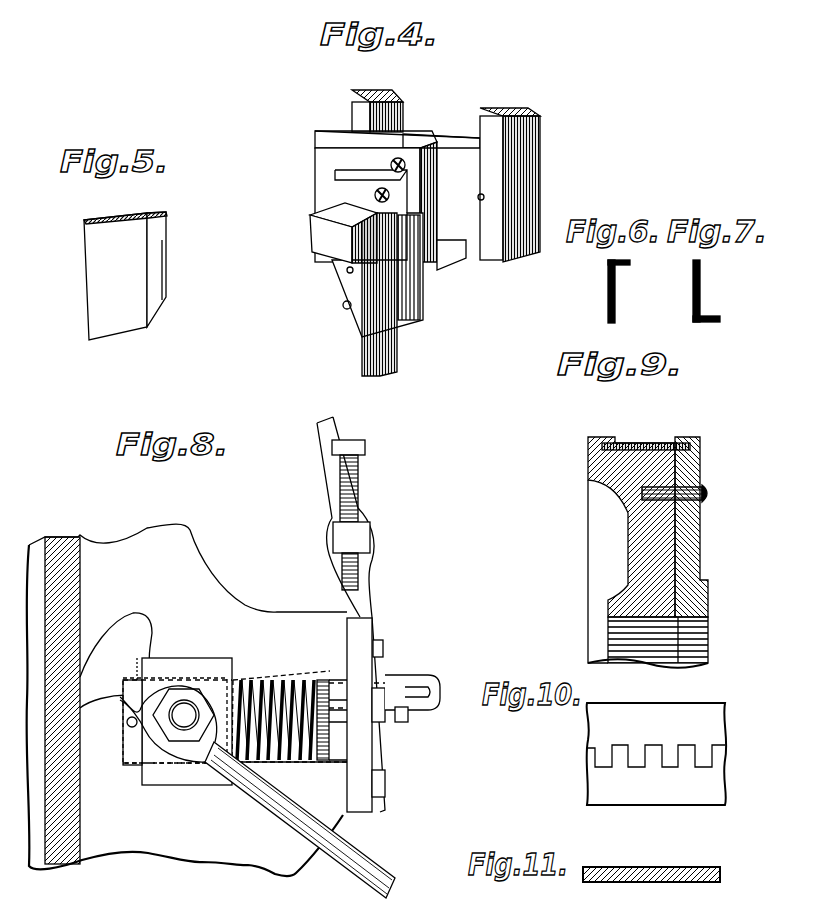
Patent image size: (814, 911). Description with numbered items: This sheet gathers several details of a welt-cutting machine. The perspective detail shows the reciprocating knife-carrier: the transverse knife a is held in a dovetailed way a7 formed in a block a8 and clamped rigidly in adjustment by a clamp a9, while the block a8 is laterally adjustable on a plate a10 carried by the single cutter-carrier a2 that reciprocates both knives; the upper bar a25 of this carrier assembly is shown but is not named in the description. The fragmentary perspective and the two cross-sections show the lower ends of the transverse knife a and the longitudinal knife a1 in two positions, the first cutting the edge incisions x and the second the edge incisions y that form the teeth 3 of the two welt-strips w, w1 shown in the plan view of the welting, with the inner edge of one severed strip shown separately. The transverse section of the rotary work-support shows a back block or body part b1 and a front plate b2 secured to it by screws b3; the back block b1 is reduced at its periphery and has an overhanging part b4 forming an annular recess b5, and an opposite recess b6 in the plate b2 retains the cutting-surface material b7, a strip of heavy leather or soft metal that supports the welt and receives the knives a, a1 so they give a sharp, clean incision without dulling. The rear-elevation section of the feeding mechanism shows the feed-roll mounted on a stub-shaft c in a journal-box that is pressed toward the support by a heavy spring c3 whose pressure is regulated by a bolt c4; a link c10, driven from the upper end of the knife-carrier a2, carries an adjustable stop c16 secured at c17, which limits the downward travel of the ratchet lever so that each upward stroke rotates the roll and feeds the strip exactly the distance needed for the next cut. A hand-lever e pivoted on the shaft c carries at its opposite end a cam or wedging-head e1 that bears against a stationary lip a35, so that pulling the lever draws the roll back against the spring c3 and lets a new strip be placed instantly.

In FIG. 4, the transverse cutter a is at (398, 355).
In FIG. 5, the transverse cutter a is at (125, 276).
In FIG. 6, the transverse cutter a is at (616, 302).
In FIG. 7, the transverse cutter a is at (701, 292).
In FIG. 5, the longitudinal cutter a1 is at (165, 272).
In FIG. 6, the longitudinal cutter a1 is at (622, 268).
In FIG. 7, the longitudinal cutter a1 is at (702, 318).
In FIG. 4, the cutter-carrier a2 is at (515, 108).
In FIG. 4, the bar a25 is at (420, 128).
In FIG. 4, the dovetailed way a7 is at (340, 215).
In FIG. 4, the block a8 is at (333, 245).
In FIG. 4, the clamp a9 is at (357, 313).
In FIG. 4, the plate a10 is at (440, 255).
In FIG. 9, the back block b1 is at (637, 560).
In FIG. 9, the front plate b2 is at (702, 550).
In FIG. 9, the screws b3 is at (708, 487).
In FIG. 9, the overhanging part b4 is at (612, 437).
In FIG. 9, the annular recess b5 is at (603, 447).
In FIG. 9, the recess b6 is at (701, 445).
In FIG. 9, the cutting-surface material b7 is at (652, 447).
In FIG. 8, the stub-shaft c is at (184, 725).
In FIG. 8, the spring c3 is at (263, 680).
In FIG. 8, the bolt c4 is at (402, 722).
In FIG. 8, the link c10 is at (320, 468).
In FIG. 8, the adjustable stop c16 is at (360, 575).
In FIG. 8, the securing point c17 is at (372, 537).
In FIG. 8, the hand-lever e is at (275, 808).
In FIG. 8, the wedging-head e1 is at (120, 640).
In FIG. 8, the lip a35 is at (62, 742).
In FIG. 10, the welt-strip w is at (724, 795).
In FIG. 10, the welt-strip w1 is at (724, 715).
In FIG. 10, the edge incisions x is at (679, 763).
In FIG. 10, the edge incisions y is at (590, 752).
In FIG. 10, the teeth 3 is at (693, 792).
In FIG. 11, the teeth 3 is at (598, 866).